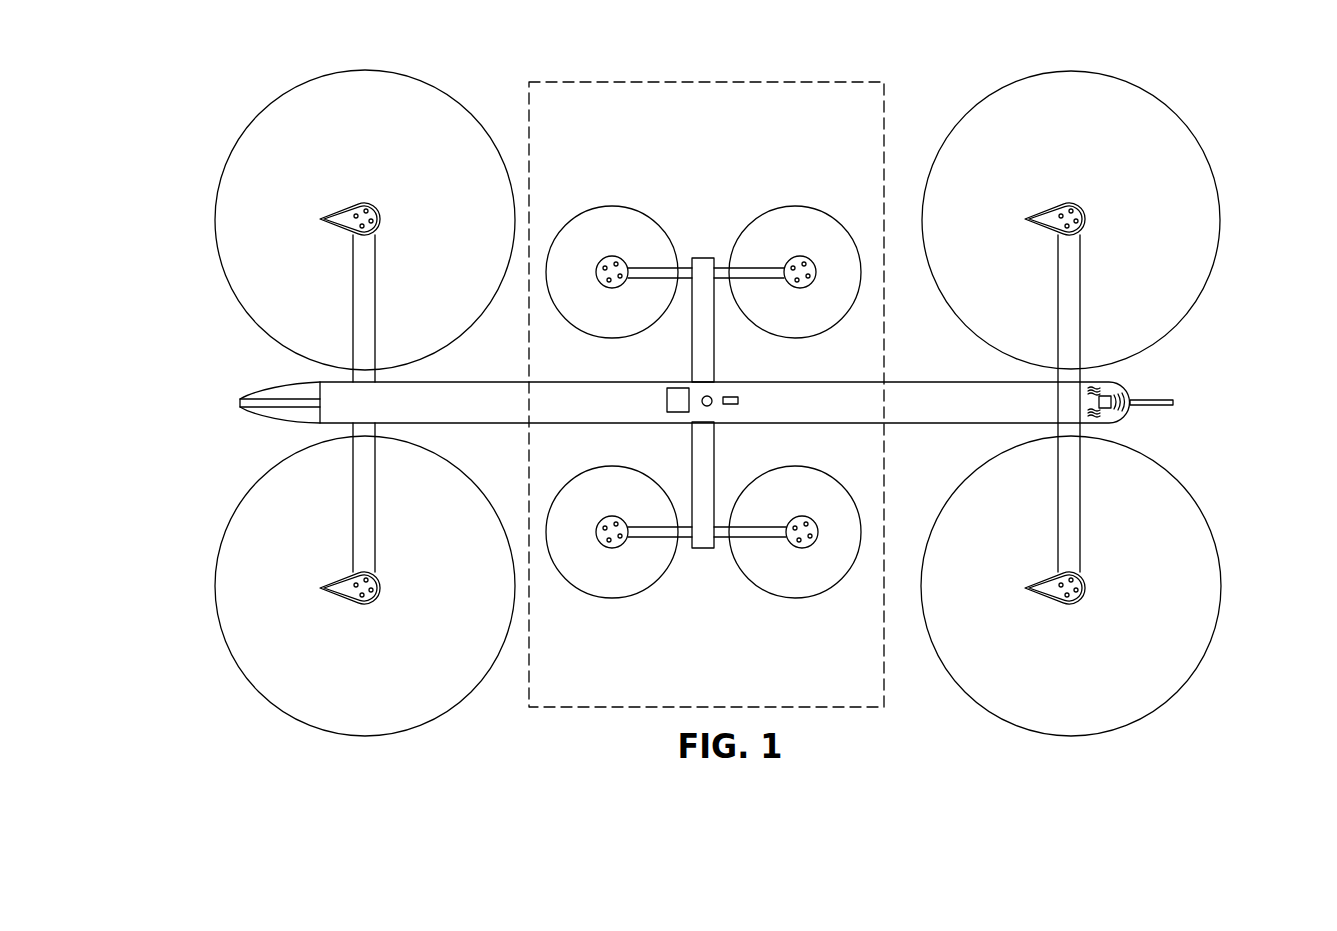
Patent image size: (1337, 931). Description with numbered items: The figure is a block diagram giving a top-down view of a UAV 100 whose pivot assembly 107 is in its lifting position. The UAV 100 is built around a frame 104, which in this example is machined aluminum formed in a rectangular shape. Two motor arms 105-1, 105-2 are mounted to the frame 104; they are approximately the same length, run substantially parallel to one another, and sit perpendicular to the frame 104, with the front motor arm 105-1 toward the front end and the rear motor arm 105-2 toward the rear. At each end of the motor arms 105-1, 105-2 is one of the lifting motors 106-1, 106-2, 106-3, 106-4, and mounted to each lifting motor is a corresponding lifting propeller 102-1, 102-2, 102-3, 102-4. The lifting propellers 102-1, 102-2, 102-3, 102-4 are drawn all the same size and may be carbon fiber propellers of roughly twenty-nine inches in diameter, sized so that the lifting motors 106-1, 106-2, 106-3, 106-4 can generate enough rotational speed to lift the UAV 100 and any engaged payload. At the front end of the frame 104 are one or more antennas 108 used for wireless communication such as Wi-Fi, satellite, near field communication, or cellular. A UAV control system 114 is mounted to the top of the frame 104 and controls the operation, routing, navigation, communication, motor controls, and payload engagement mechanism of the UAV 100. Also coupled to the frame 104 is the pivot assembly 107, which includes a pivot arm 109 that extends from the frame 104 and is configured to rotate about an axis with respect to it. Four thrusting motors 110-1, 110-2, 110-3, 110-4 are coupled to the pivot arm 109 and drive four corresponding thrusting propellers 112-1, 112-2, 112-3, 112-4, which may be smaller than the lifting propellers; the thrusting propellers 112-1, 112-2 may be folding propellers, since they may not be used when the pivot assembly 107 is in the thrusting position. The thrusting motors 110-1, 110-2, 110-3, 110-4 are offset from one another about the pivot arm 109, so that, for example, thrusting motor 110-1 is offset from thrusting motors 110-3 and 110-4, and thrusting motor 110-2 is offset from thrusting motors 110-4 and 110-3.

The UAV 100 is at (1223, 108).
The lifting propeller 102-1 is at (1125, 110).
The lifting propeller 102-2 is at (1172, 518).
The lifting propeller 102-3 is at (237, 633).
The lifting propeller 102-4 is at (418, 108).
The frame 104 is at (937, 390).
The front motor arm 105-1 is at (1070, 295).
The rear motor arm 105-2 is at (365, 295).
The lifting motor 106-1 is at (1053, 215).
The lifting motor 106-2 is at (1053, 592).
The lifting motor 106-3 is at (348, 592).
The lifting motor 106-4 is at (347, 215).
The pivot assembly 107 is at (708, 81).
The antenna 108 is at (1168, 402).
The pivot arm 109 is at (705, 357).
The thrusting motor 110-1 is at (810, 260).
The thrusting motor 110-2 is at (803, 538).
The thrusting motor 110-3 is at (598, 270).
The thrusting motor 110-4 is at (607, 534).
The thrusting propeller 112-1 is at (763, 227).
The thrusting propeller 112-2 is at (763, 575).
The thrusting propeller 112-3 is at (648, 227).
The thrusting propeller 112-4 is at (643, 565).
The UAV control system 114 is at (682, 387).